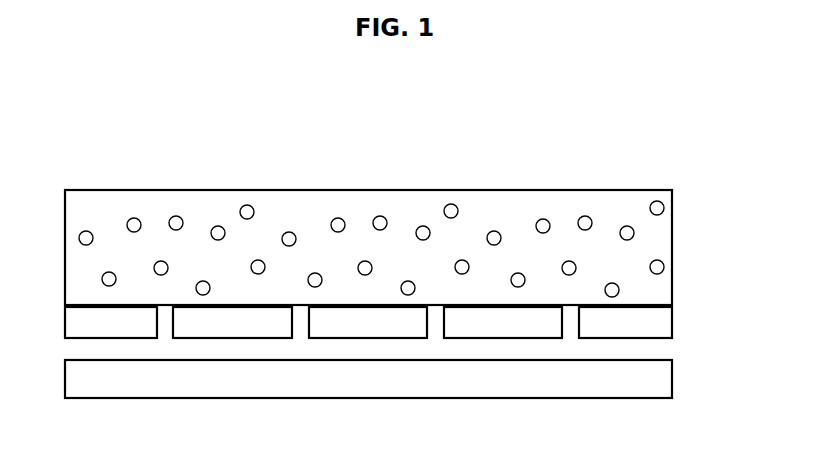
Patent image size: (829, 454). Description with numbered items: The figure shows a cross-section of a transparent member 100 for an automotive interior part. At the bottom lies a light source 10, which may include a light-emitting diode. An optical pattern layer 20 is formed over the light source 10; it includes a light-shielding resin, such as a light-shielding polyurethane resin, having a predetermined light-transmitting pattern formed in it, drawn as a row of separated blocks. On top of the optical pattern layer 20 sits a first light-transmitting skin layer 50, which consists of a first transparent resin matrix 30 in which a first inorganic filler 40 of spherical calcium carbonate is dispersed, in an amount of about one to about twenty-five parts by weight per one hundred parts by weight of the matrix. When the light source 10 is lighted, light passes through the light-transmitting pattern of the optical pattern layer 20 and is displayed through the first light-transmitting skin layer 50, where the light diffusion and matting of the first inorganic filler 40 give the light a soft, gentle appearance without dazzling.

The transparent member 100 is at (61, 84).
The light source 10 is at (660, 380).
The optical pattern layer 20 is at (660, 319).
The first transparent resin matrix 30 is at (616, 210).
The first inorganic filler 40 is at (660, 204).
The first light-transmitting skin layer 50 is at (695, 133).